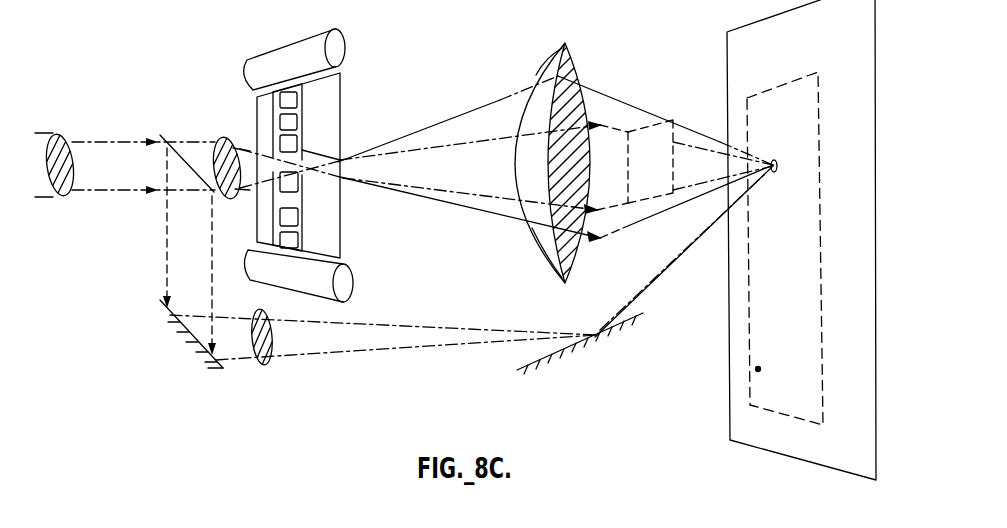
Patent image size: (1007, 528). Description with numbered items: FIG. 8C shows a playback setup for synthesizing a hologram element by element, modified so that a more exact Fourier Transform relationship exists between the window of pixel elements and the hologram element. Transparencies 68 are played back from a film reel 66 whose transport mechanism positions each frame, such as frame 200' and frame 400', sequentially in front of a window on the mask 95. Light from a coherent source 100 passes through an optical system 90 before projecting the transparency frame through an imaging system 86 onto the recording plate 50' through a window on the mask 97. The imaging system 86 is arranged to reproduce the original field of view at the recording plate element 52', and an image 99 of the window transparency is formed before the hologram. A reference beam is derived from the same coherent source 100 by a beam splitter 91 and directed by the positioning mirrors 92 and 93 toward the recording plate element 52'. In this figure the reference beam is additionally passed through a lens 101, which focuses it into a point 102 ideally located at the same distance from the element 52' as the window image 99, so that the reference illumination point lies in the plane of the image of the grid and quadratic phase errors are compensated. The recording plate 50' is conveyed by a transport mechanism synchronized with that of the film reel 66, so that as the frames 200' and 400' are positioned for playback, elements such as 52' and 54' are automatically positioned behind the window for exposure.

The film reel 66 is at (332, 46).
The transparencies 68 is at (302, 116).
The transparency frame 200' is at (345, 132).
The transparency frame 400' is at (342, 245).
The mask 95 is at (341, 214).
The imaging system 86 is at (576, 60).
The window image 99 is at (653, 114).
The recording plate element 52' is at (788, 147).
The recording plate 50' is at (806, 248).
The recording plate element 54' is at (781, 377).
The mask 97 is at (754, 428).
The focus point 102 is at (665, 270).
The coherent source 100 is at (61, 197).
The beam splitter 91 is at (165, 136).
The optical system 90 is at (228, 138).
The positioning mirror 92 is at (203, 350).
The lens 101 is at (262, 365).
The positioning mirror 93 is at (597, 338).